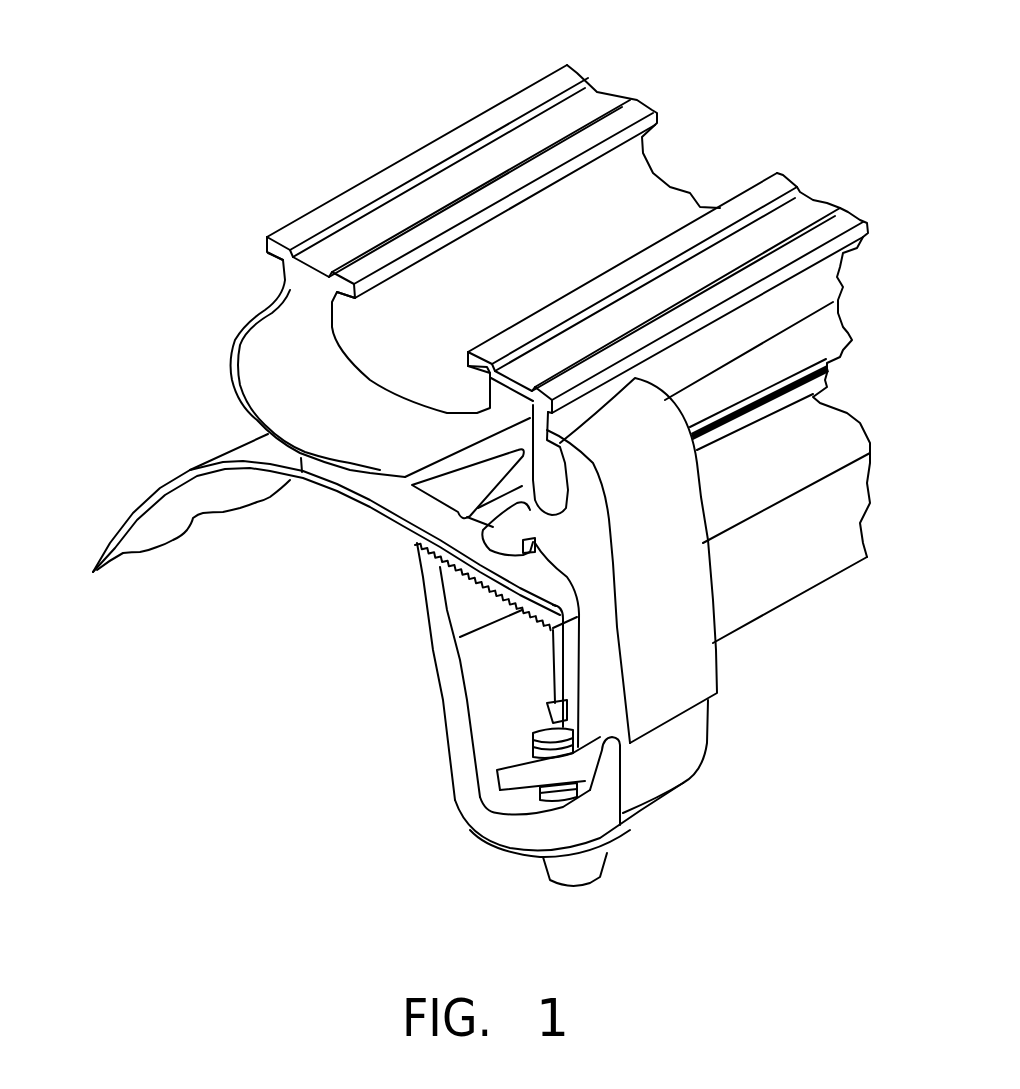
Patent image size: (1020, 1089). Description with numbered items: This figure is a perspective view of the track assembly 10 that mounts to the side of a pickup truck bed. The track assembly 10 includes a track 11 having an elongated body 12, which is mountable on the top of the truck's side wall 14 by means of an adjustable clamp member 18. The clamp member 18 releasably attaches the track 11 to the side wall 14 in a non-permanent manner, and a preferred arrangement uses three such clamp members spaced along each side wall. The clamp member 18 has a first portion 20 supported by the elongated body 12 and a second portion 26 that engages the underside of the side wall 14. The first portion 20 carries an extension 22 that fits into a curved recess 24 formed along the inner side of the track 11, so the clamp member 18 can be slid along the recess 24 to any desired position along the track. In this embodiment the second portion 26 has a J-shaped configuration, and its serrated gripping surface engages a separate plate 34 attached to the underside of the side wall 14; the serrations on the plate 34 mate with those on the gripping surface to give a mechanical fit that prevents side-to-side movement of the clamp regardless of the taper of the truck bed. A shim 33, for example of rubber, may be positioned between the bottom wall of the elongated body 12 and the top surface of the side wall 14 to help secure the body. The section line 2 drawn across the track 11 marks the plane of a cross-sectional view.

The track assembly 10 is at (603, 654).
The track 11 is at (471, 323).
The elongated body 12 is at (231, 356).
The side wall 14 is at (160, 487).
The clamp member 18 is at (725, 733).
The first portion 20 is at (715, 672).
The extension 22 is at (530, 521).
The recess 24 is at (427, 615).
The second portion 26 is at (450, 802).
The shim 33 is at (330, 476).
The plate member 34 is at (418, 543).
The section line for FIG. 2 is at (222, 330).